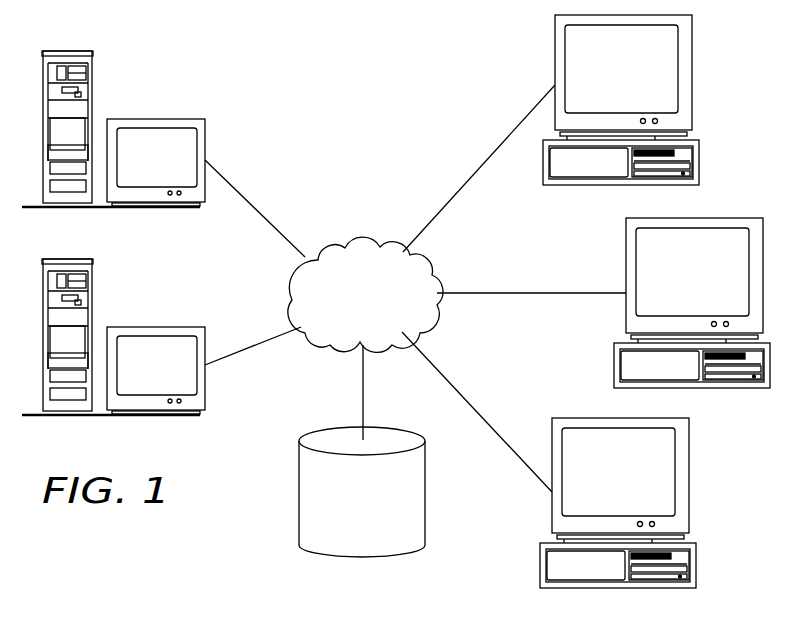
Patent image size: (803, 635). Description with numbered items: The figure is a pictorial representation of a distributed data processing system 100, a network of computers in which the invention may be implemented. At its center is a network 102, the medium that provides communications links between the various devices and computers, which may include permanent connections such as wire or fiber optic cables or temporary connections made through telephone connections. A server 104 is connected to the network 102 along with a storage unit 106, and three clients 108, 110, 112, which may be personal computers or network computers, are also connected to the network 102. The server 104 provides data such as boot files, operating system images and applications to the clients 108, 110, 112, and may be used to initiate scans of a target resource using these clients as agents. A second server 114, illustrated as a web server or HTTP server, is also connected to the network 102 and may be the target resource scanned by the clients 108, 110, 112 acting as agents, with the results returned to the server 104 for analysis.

The distributed data processing system 100 is at (301, 88).
The network 102 is at (384, 323).
The server 104 is at (178, 377).
The storage unit 106 is at (383, 532).
The client 108 is at (621, 116).
The client 110 is at (692, 317).
The client 112 is at (618, 518).
The server 114 is at (178, 169).